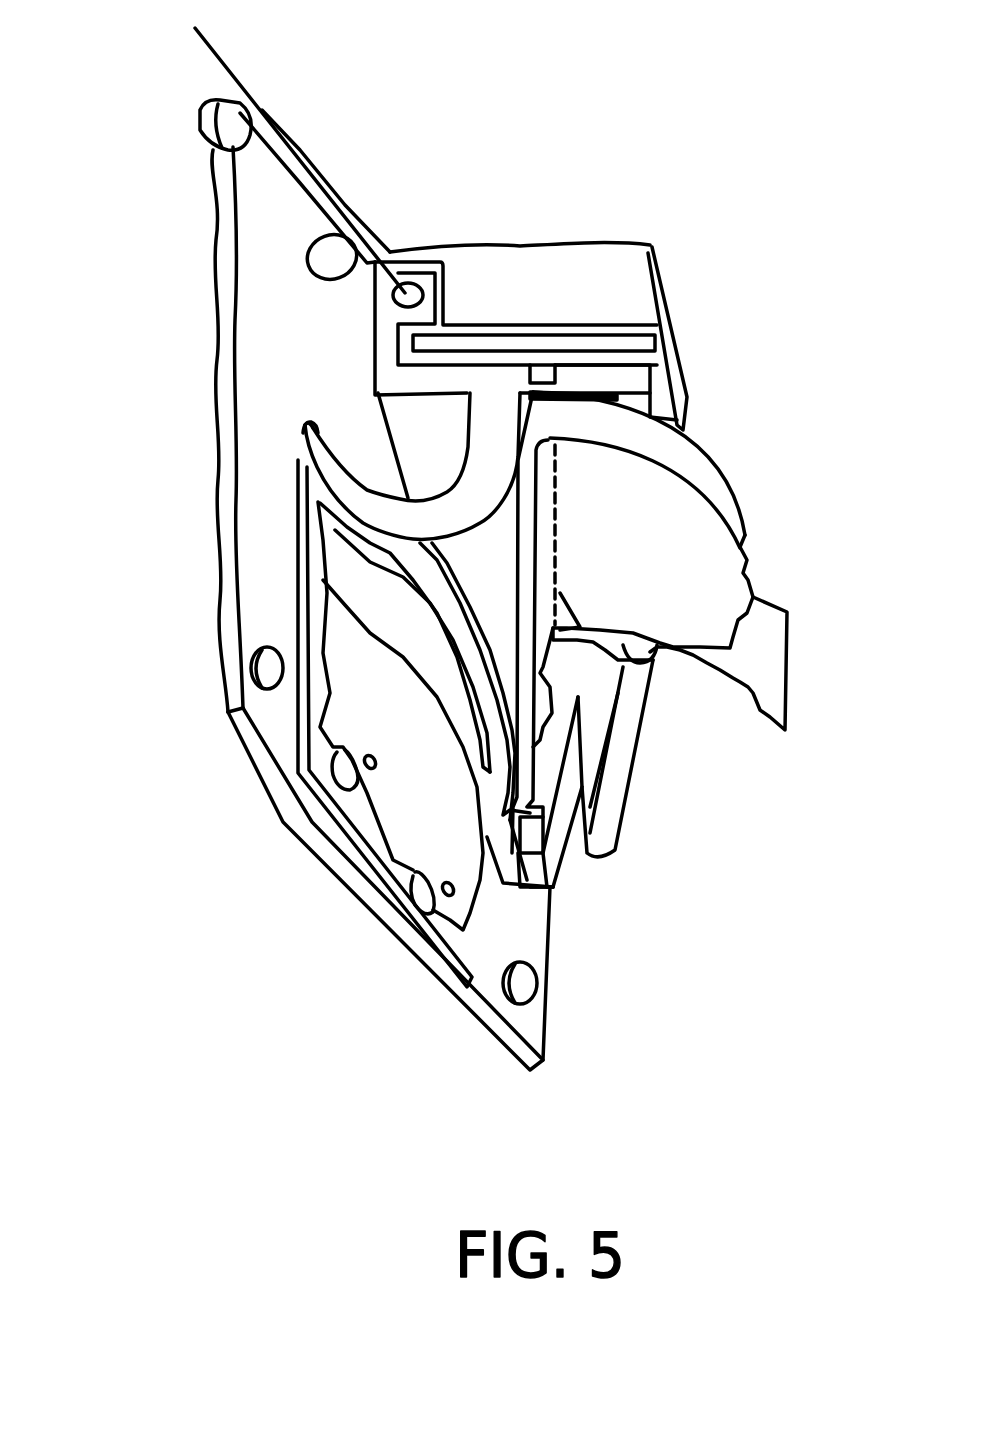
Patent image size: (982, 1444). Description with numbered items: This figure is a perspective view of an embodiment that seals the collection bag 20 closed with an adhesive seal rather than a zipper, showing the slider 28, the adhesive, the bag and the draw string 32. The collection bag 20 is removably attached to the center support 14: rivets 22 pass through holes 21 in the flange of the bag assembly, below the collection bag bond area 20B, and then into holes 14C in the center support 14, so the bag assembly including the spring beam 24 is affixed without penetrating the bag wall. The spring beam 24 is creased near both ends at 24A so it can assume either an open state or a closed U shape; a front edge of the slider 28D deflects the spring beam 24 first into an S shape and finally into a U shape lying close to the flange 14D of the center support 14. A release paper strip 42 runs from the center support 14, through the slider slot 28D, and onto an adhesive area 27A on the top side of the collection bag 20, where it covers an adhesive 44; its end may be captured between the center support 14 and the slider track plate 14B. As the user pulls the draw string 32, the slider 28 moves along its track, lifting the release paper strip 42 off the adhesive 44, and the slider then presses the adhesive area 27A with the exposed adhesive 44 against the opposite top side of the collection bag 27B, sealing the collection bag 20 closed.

The center support 14 is at (533, 248).
The slider track plate 14B is at (573, 343).
The holes 14C is at (258, 669).
The flange 14D is at (214, 238).
The collection bag 20 is at (713, 562).
The collection bag bond area 20B is at (335, 553).
The holes 21 is at (345, 750).
The rivets 22 is at (345, 750).
The spring beam 24 is at (768, 643).
The crease 24A is at (557, 590).
The adhesive area 27A is at (303, 432).
The opposite top side of the collection bag 27B is at (717, 463).
The slider 28 is at (597, 377).
The slider slot 28D is at (557, 375).
The draw string 32 is at (210, 42).
The release paper strip 42 is at (462, 450).
The adhesive 44 is at (330, 480).